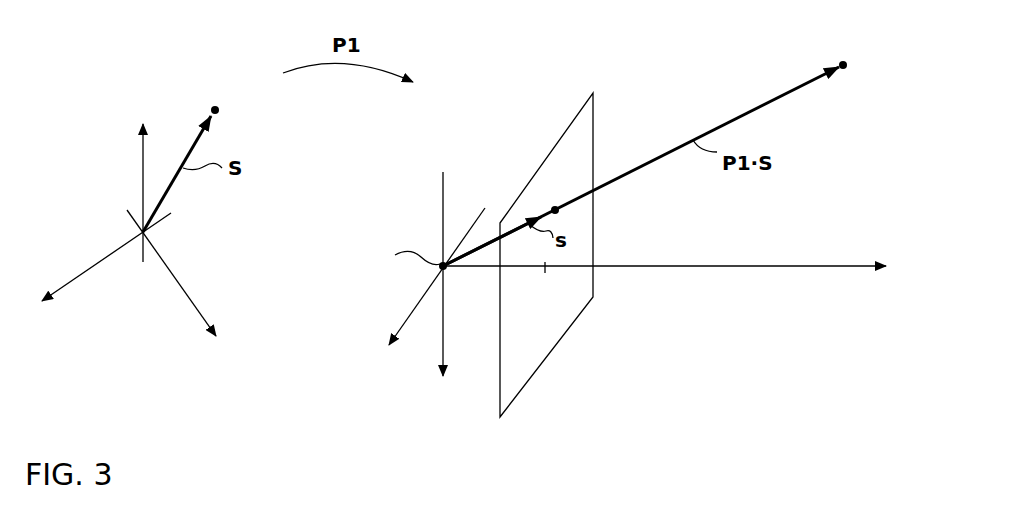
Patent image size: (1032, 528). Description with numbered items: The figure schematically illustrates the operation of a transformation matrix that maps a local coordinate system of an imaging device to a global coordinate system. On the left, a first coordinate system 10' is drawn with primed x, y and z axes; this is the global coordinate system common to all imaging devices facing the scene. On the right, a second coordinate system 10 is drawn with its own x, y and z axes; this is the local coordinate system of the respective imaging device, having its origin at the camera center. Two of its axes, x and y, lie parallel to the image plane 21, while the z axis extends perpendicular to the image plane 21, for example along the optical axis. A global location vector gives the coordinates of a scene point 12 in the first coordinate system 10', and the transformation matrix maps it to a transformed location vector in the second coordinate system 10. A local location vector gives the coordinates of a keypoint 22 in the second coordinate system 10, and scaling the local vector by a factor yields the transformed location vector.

The first coordinate system 10' is at (123, 232).
The second coordinate system 10 is at (624, 274).
The scene point 12 is at (220, 113).
The image plane 21 is at (595, 228).
The keypoint 22 is at (556, 207).